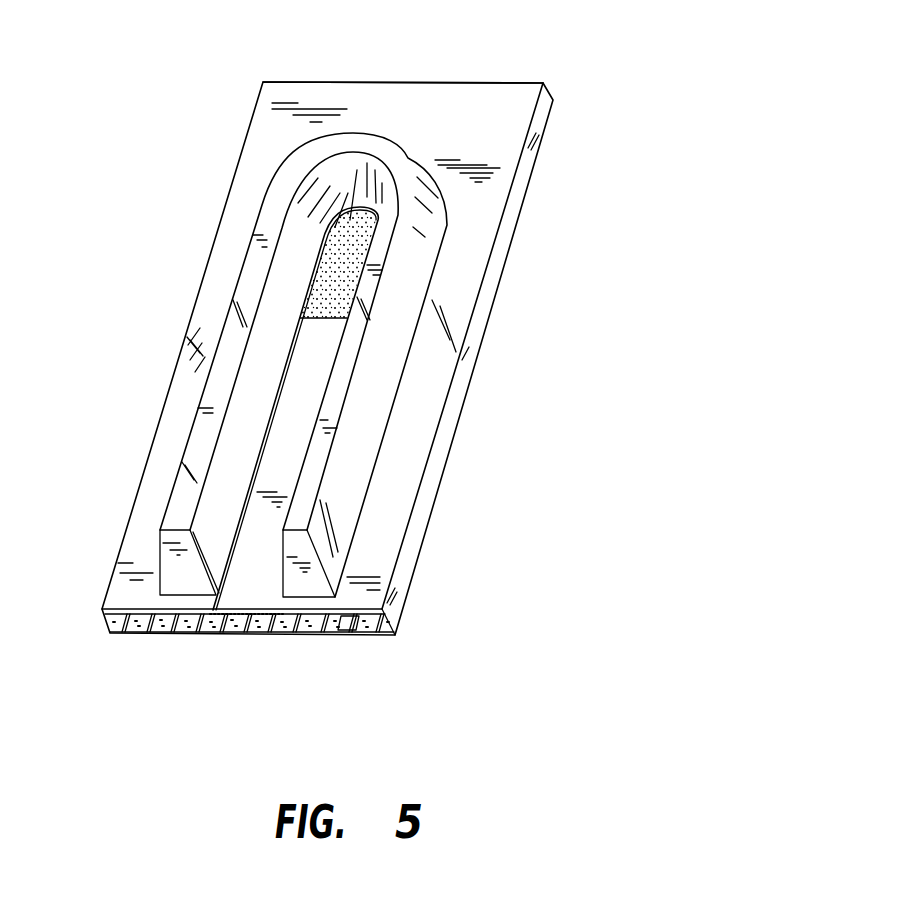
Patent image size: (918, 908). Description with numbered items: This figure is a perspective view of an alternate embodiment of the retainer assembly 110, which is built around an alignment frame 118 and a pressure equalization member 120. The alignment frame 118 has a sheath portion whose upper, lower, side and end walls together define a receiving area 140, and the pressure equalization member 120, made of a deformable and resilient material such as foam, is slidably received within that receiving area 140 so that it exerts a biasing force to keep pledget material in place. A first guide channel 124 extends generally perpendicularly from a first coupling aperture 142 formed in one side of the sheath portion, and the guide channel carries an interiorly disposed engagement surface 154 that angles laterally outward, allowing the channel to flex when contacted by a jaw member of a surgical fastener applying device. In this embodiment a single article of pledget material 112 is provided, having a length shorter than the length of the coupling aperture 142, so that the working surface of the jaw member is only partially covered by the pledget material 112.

The retainer assembly 110 is at (662, 127).
The alignment frame 118 is at (432, 74).
The first guide channel 124 is at (397, 342).
The first coupling aperture 142 is at (282, 394).
The engagement surface 154 is at (280, 268).
The pledget material 112 is at (270, 466).
The pressure equalization member 120 is at (352, 262).
The receiving area 140 is at (146, 638).